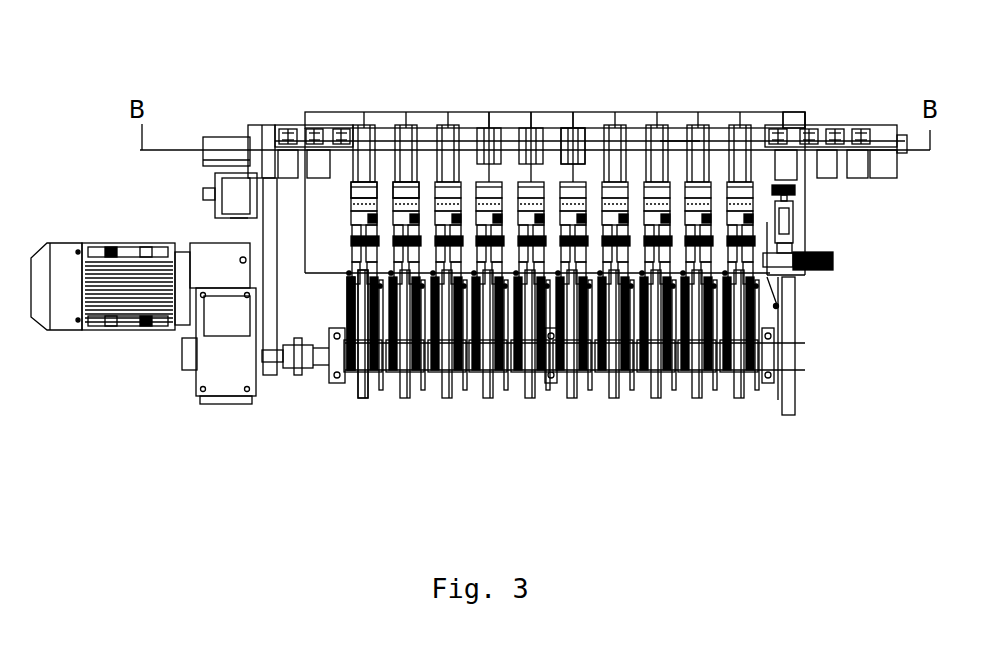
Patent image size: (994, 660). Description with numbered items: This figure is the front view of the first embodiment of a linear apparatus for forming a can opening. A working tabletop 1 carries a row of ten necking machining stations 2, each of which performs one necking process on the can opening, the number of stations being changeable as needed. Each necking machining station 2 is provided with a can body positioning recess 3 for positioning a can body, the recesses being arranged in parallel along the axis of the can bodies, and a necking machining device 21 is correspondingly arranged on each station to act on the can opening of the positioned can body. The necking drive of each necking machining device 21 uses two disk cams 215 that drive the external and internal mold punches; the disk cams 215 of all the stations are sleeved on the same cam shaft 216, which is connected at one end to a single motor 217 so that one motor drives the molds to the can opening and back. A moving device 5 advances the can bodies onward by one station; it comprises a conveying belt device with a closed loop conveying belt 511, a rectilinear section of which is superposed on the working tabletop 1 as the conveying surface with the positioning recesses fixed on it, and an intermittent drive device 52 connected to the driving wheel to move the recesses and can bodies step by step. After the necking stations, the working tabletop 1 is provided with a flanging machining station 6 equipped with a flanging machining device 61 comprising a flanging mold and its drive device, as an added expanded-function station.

The working tabletop 1 is at (753, 122).
The necking machining station 2 is at (365, 113).
The necking machining device 21 is at (358, 192).
The can body positioning recess 3 is at (572, 130).
The moving device 5 is at (229, 135).
The intermittent drive device 52 is at (230, 178).
The closed loop conveying belt 511 is at (677, 143).
The flanging machining station 6 is at (788, 118).
The flanging machining device 61 is at (792, 225).
The disk cam 215 is at (358, 380).
The cam shaft 216 is at (320, 357).
The motor 217 is at (121, 332).